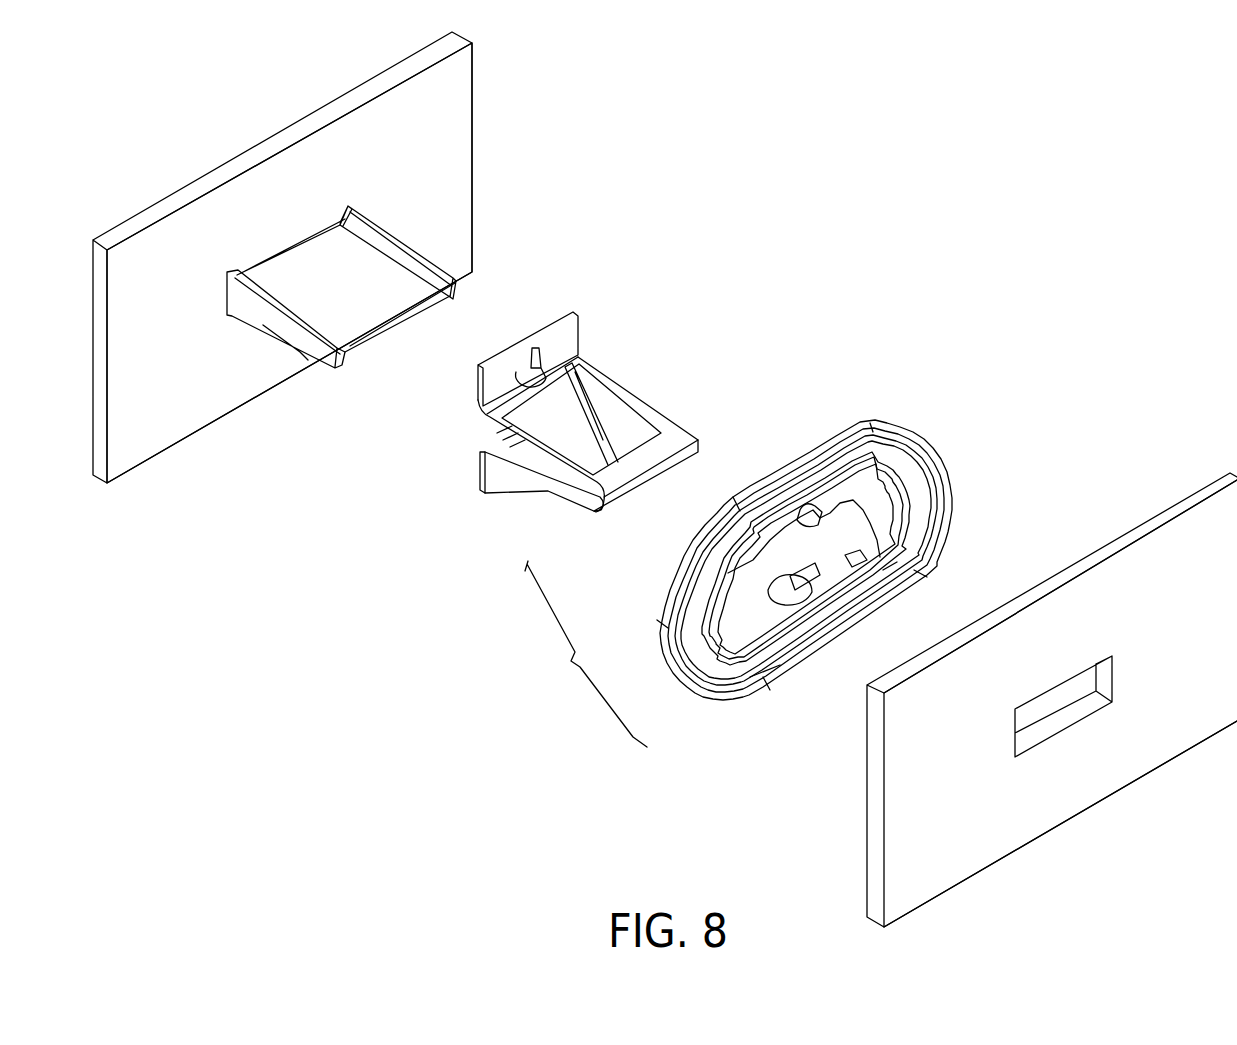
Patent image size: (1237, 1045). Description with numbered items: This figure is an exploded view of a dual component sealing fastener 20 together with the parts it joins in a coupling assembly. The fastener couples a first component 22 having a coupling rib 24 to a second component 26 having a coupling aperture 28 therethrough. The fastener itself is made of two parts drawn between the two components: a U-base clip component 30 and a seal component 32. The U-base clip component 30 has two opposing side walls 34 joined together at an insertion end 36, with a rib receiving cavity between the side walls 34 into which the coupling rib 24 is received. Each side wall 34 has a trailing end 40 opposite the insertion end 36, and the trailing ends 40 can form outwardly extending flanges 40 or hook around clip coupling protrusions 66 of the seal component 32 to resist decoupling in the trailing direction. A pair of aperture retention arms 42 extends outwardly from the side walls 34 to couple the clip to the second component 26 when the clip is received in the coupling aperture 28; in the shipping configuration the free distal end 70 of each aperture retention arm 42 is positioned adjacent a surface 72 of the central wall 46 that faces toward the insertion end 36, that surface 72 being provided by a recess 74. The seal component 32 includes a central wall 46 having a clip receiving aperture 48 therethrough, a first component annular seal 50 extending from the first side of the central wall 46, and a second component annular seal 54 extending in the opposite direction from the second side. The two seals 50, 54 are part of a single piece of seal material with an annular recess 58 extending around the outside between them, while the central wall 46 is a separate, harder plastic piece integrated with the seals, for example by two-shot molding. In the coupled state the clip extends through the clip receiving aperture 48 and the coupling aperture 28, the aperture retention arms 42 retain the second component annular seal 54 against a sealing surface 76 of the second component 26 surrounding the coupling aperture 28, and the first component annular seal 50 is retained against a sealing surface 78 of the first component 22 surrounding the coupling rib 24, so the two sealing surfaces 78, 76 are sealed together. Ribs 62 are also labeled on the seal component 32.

The dual component sealing fastener 20 is at (586, 654).
The first component 22 is at (203, 460).
The coupling rib 24 is at (373, 308).
The second component 26 is at (1106, 820).
The coupling aperture 28 is at (1074, 693).
The U-base clip component 30 is at (592, 447).
The seal component 32 is at (808, 581).
The opposing side walls 34 is at (548, 490).
The insertion end 36 is at (697, 435).
The trailing end 40 is at (480, 470).
The aperture retention arms 42 is at (587, 393).
The central wall 46 is at (915, 489).
The clip receiving aperture 48 is at (857, 517).
The first component annular seal 50 is at (663, 640).
The second component annular seal 54 is at (700, 562).
The annular recess 58 is at (687, 577).
The ribs 62 is at (750, 677).
The clip coupling protrusions 66 is at (783, 650).
The free distal end 70 is at (540, 345).
The surface 72 is at (840, 607).
The recess 74 is at (810, 500).
The sealing surface 76 is at (1165, 511).
The sealing surface 78 is at (217, 385).